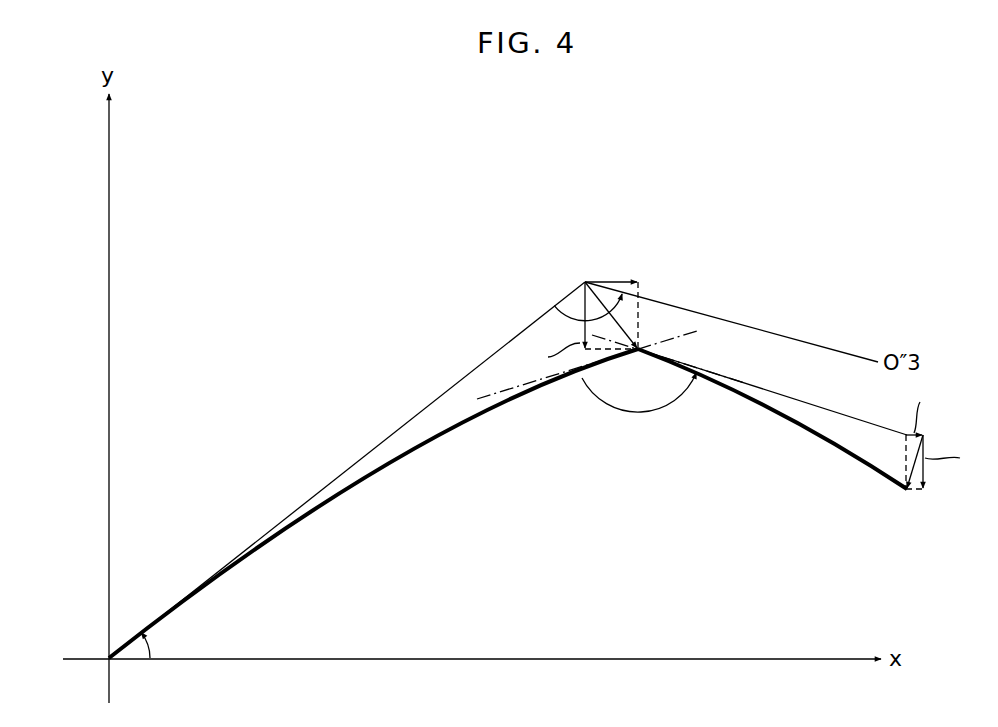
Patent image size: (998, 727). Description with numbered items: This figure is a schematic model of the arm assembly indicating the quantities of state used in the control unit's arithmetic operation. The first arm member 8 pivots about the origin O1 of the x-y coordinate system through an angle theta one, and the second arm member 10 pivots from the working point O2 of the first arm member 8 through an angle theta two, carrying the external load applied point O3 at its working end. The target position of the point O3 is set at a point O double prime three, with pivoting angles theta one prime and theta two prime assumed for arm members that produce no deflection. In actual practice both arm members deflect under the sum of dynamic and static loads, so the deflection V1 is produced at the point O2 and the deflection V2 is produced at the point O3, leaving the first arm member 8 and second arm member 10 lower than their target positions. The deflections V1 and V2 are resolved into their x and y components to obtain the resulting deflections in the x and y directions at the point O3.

The first arm member 8 is at (392, 463).
The second arm member 10 is at (745, 402).
The pivot point of first arm member O1 is at (155, 645).
The working point of first arm member O2 is at (604, 351).
The external load applied point of second arm member O3 is at (915, 449).
The deflection of first arm member V1 is at (577, 314).
The deflection of second arm member V2 is at (908, 463).